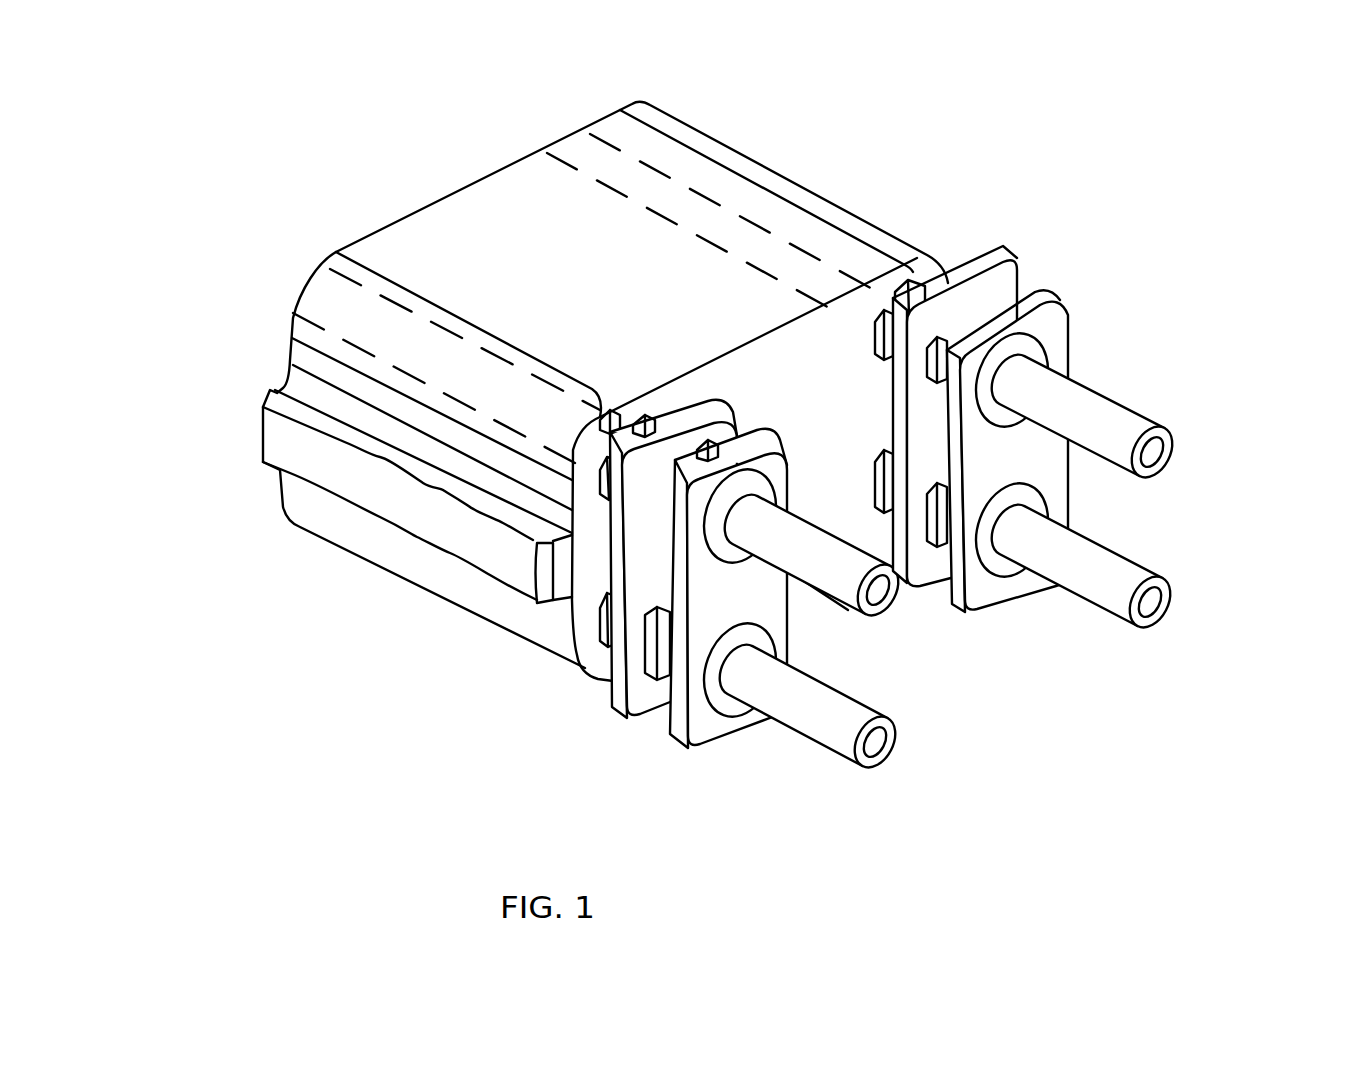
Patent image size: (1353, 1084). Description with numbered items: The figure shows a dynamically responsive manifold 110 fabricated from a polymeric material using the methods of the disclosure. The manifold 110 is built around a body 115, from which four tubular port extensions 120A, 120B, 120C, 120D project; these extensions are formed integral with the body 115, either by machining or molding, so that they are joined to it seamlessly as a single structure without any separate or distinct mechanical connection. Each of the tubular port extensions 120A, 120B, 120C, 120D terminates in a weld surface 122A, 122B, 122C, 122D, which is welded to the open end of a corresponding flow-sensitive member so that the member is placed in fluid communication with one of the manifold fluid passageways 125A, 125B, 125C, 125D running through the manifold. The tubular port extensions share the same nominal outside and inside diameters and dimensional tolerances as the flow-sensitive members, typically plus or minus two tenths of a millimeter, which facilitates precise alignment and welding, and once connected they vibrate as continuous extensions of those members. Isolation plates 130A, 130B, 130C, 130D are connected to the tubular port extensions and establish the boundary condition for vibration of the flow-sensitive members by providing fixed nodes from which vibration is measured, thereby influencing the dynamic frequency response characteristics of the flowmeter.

The dynamically responsive manifold 110 is at (868, 180).
The body 115 is at (882, 225).
The tubular port extension 120A is at (1148, 422).
The tubular port extension 120B is at (1133, 565).
The tubular port extension 120C is at (857, 593).
The tubular port extension 120D is at (810, 740).
The weld surface 122A is at (1169, 447).
The weld surface 122B is at (1168, 608).
The weld surface 122C is at (895, 593).
The weld surface 122D is at (894, 746).
The manifold fluid passageway 125A is at (546, 132).
The manifold fluid passageway 125B is at (505, 140).
The manifold fluid passageway 125C is at (325, 300).
The manifold fluid passageway 125D is at (240, 418).
The isolation plate 130A is at (993, 265).
The isolation plate 130B is at (1050, 295).
The isolation plate 130C is at (615, 708).
The isolation plate 130D is at (660, 745).